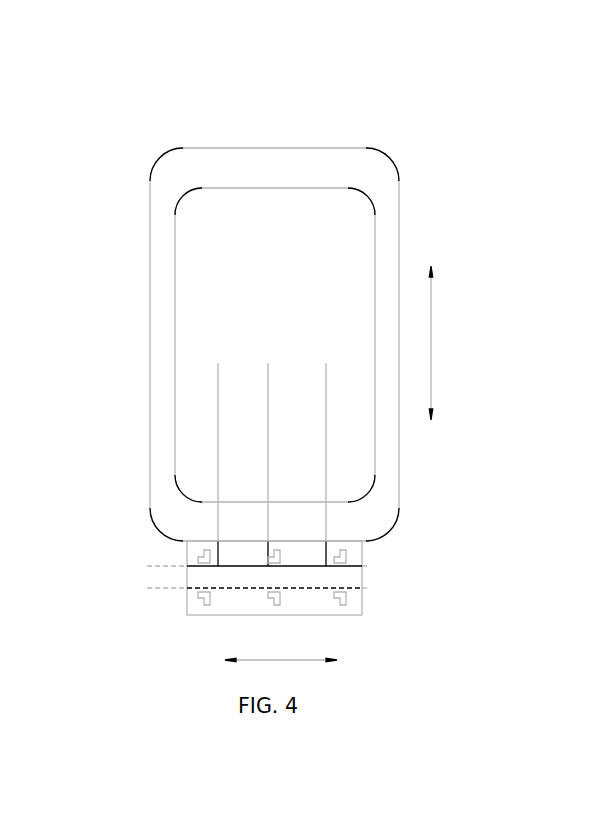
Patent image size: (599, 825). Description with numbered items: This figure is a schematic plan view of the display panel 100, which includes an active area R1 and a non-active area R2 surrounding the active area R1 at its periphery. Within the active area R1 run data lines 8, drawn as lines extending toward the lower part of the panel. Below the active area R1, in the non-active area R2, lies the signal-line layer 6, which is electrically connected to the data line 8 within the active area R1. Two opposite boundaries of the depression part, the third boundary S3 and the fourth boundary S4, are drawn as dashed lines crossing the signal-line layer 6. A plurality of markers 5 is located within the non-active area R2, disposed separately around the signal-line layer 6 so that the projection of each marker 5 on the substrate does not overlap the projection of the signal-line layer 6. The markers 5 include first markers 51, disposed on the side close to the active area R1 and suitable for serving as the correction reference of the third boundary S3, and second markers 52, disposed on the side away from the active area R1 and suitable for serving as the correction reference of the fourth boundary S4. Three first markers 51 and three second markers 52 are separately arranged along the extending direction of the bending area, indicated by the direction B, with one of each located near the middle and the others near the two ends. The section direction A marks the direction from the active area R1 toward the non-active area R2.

The display panel 100 is at (299, 332).
The active area R1 is at (291, 355).
The non-active area R2 is at (326, 512).
The data line 8 is at (218, 411).
The signal-line layer 6 is at (237, 588).
The third boundary S3 is at (158, 567).
The fourth boundary S4 is at (158, 588).
The marker 5 is at (255, 585).
The first marker 51 is at (199, 556).
The second marker 52 is at (200, 597).
The section line A-A' A is at (432, 345).
The direction BB' B is at (283, 659).